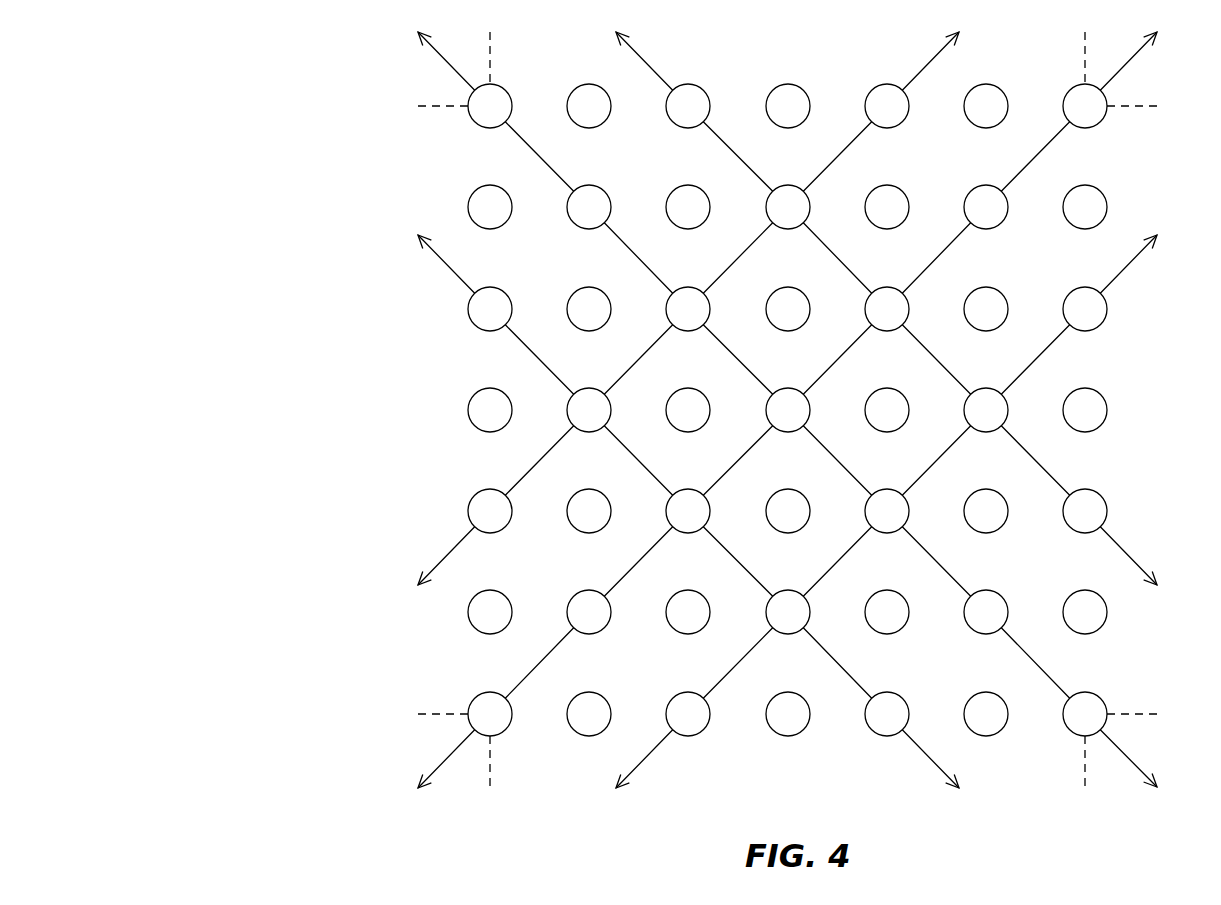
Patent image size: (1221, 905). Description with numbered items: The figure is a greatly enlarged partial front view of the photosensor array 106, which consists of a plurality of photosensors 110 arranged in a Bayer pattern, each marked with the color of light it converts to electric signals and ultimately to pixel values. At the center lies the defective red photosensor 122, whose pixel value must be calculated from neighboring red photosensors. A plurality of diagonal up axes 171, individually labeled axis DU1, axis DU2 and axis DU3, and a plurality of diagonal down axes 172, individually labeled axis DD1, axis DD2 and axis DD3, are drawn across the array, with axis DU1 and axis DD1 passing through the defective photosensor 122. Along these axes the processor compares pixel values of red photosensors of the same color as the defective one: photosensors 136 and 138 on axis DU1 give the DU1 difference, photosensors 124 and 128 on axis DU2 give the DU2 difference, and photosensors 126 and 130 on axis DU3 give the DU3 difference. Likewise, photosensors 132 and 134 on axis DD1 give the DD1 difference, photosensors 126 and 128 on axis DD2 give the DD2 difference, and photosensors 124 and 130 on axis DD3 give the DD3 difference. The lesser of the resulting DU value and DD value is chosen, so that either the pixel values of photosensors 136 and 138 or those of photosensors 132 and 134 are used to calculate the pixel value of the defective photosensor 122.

The photosensor array 106 is at (272, 124).
The photosensors 110 is at (788, 84).
The defective photosensor 122 is at (808, 397).
The photosensor 124 is at (591, 388).
The photosensor 126 is at (990, 388).
The photosensor 128 is at (806, 195).
The photosensor 130 is at (808, 598).
The photosensor 132 is at (592, 231).
The photosensor 134 is at (987, 590).
The photosensor 136 is at (590, 590).
The photosensor 138 is at (984, 231).
The diagonal up axes 171 is at (1140, 45).
The diagonal down axes 172 is at (650, 56).
The axis DD1 is at (538, 155).
The axis DD2 is at (655, 70).
The axis DD3 is at (447, 262).
The axis DU1 is at (1041, 155).
The axis DU2 is at (919, 70).
The axis DU3 is at (1128, 262).